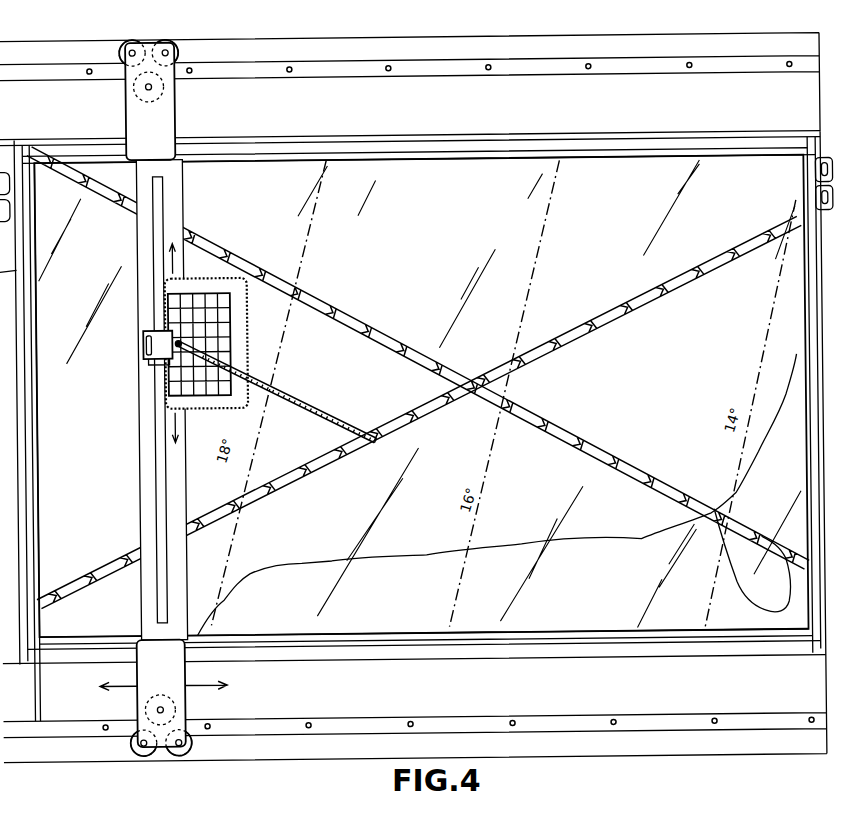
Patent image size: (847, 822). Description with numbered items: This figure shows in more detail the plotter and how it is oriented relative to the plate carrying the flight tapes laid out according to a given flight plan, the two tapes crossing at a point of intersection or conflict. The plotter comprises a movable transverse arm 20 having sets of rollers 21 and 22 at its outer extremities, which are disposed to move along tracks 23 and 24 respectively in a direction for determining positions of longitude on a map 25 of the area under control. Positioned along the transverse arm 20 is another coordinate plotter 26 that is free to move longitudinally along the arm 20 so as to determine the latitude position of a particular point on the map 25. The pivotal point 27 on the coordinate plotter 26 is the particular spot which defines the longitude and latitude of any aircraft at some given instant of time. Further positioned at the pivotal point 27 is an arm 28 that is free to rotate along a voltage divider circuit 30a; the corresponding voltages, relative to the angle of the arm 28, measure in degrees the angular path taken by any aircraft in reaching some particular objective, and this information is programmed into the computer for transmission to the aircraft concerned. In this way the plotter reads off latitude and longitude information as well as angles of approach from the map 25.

The movable transverse arm 20 is at (140, 492).
The set of rollers 21 is at (183, 50).
The set of rollers 22 is at (158, 756).
The track 23 is at (372, 78).
The track 24 is at (438, 718).
The map 25 is at (744, 491).
The coordinate plotter 26 is at (247, 320).
The pivotal point 27 is at (175, 333).
The arm 28 is at (278, 392).
The voltage divider circuit 30a is at (174, 364).